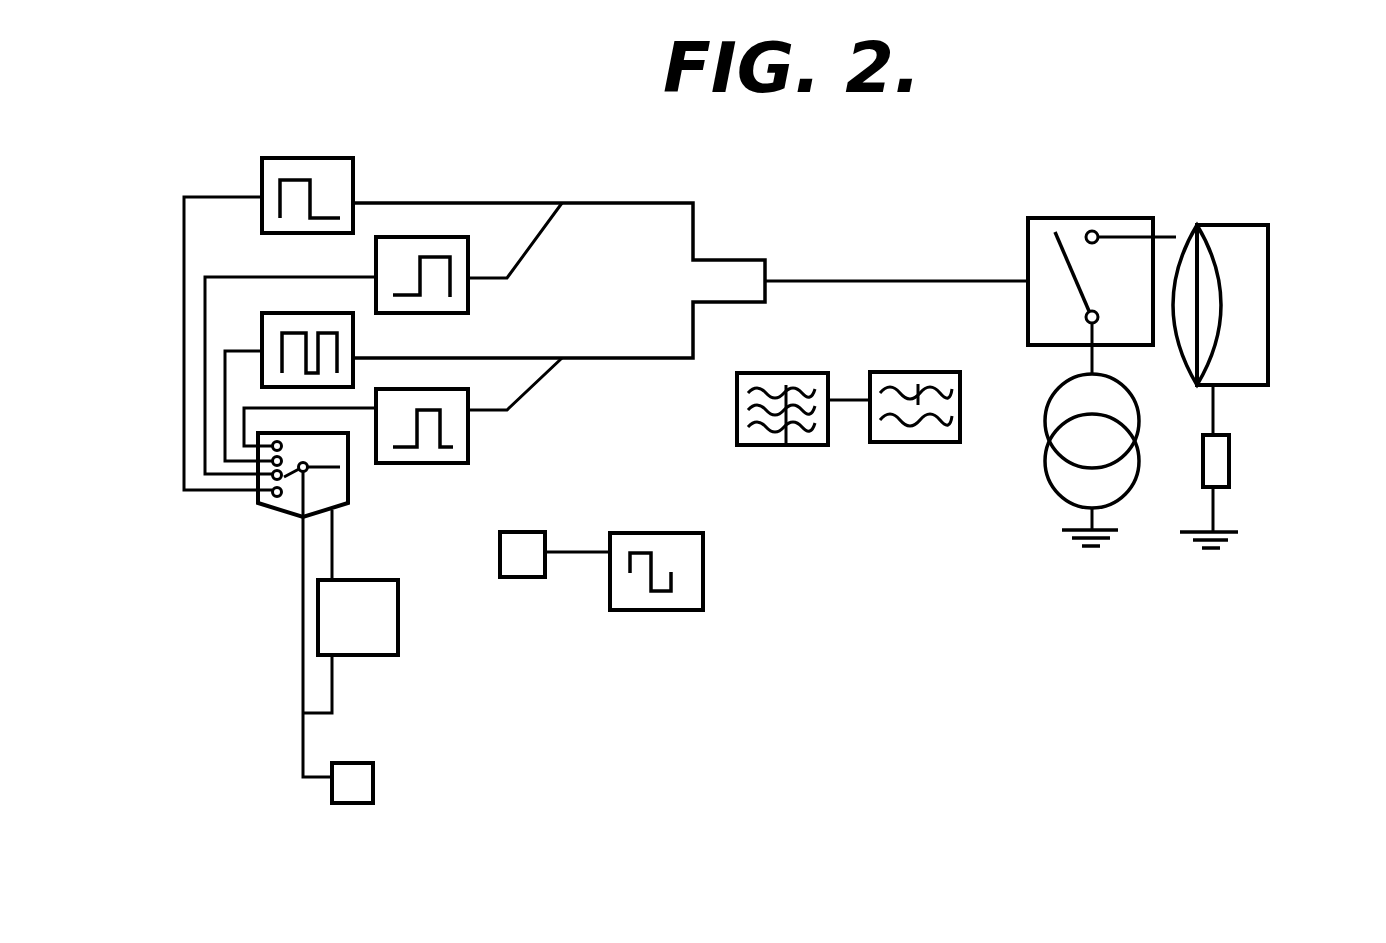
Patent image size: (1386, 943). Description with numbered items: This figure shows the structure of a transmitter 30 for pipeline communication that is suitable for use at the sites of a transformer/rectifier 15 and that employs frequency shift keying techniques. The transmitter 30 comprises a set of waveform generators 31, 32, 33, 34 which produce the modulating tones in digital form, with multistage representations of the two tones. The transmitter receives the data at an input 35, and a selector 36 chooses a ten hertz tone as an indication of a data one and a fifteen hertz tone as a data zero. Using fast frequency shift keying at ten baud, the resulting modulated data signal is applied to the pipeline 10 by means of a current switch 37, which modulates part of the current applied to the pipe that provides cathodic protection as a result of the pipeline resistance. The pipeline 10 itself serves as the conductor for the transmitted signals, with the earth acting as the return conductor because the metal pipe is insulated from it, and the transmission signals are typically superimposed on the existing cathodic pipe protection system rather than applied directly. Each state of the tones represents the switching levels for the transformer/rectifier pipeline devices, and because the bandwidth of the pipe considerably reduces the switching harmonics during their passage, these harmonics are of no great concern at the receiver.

The pipeline 10 is at (1250, 340).
The transformer/rectifier 15 is at (858, 208).
The transmitter 30 is at (1268, 558).
The waveform generator 31 is at (345, 178).
The waveform generator 32 is at (468, 298).
The waveform generator 33 is at (272, 328).
The waveform generator 34 is at (468, 432).
The input 35 is at (353, 803).
The selector 36 is at (288, 498).
The current switch 37 is at (1048, 312).